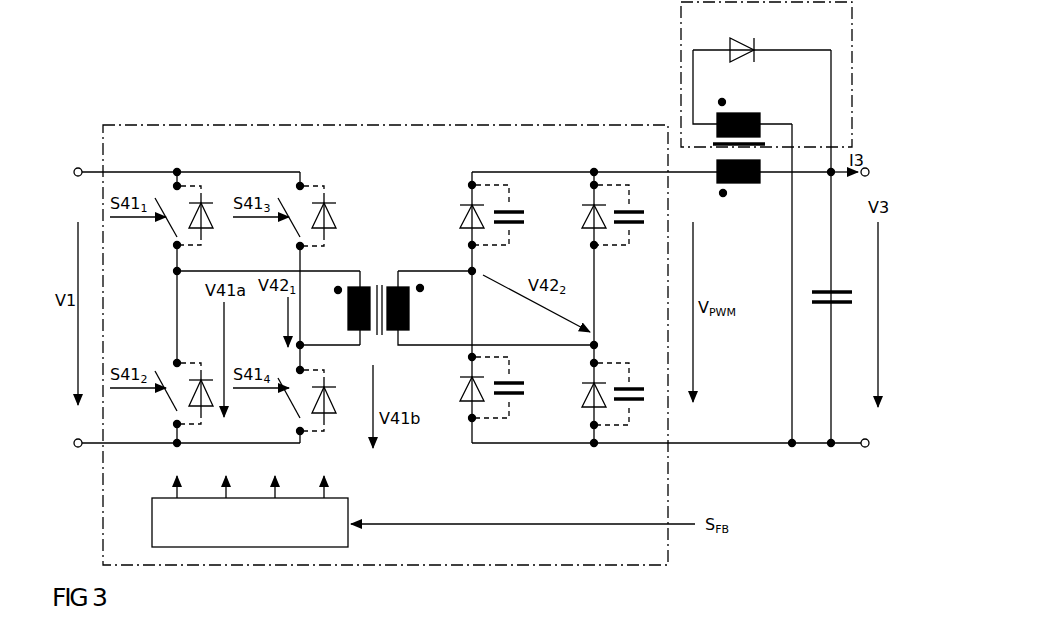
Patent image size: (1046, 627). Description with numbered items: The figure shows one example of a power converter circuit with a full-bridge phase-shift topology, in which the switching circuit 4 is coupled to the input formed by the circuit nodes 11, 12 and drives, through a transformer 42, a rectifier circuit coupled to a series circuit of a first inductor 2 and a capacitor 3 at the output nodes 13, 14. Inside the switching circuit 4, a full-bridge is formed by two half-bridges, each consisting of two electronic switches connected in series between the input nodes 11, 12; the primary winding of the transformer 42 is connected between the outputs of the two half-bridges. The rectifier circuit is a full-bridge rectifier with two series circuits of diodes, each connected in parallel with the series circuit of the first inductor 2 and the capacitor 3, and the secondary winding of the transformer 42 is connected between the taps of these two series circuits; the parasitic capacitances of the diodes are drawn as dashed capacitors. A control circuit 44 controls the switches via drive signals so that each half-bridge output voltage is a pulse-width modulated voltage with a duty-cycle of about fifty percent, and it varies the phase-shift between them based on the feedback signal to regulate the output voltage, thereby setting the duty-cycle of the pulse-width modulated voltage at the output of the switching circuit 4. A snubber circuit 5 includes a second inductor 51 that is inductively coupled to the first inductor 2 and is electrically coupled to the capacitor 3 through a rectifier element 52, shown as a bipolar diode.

The first inductor 2 is at (750, 190).
The capacitor 3 is at (827, 290).
The switching circuit 4 is at (408, 124).
The snubber circuit 5 is at (681, 50).
The circuit node 11 is at (74, 165).
The circuit node 12 is at (76, 451).
The circuit node 13 is at (865, 165).
The circuit node 14 is at (868, 452).
The transformer 42 is at (448, 285).
The control circuit 44 is at (350, 498).
The second inductor 51 is at (762, 113).
The rectifier element 52 is at (760, 40).